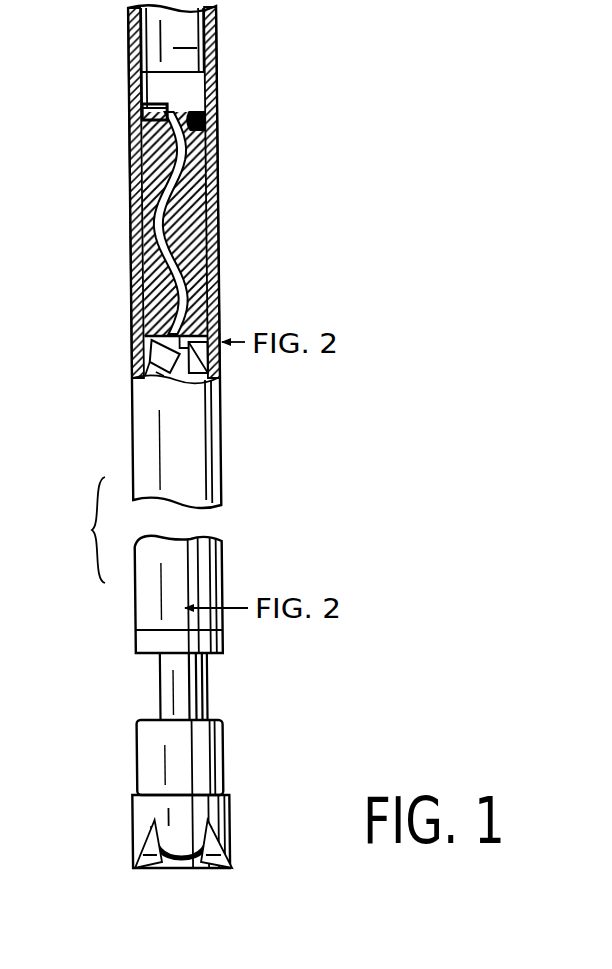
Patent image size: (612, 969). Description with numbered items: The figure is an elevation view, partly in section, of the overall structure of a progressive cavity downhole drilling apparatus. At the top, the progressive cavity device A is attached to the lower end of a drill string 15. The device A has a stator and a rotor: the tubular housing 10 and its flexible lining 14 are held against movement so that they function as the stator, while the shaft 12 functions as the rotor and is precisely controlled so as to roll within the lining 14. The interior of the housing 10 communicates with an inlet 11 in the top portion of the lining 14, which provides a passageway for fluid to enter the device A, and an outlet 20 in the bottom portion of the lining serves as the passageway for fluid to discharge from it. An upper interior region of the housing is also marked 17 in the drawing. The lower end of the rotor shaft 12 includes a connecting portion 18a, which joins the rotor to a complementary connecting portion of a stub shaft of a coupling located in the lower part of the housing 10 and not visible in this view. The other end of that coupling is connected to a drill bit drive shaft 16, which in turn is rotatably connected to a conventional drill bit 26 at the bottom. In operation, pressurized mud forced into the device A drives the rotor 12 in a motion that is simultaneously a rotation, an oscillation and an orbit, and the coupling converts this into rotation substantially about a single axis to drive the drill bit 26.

The housing 10 is at (129, 78).
The passageway (inlet) 11 is at (185, 123).
The shaft (rotor) 12 is at (141, 122).
The flexible lining 14 is at (206, 165).
The drill string 15 is at (128, 12).
The drill bit drive shaft 16 is at (207, 693).
The interior chamber 17 is at (185, 33).
The connecting portion 18a is at (131, 352).
The passageway (outlet) 20 is at (226, 320).
The drill bit 26 is at (203, 872).
The progressive cavity device A is at (112, 212).